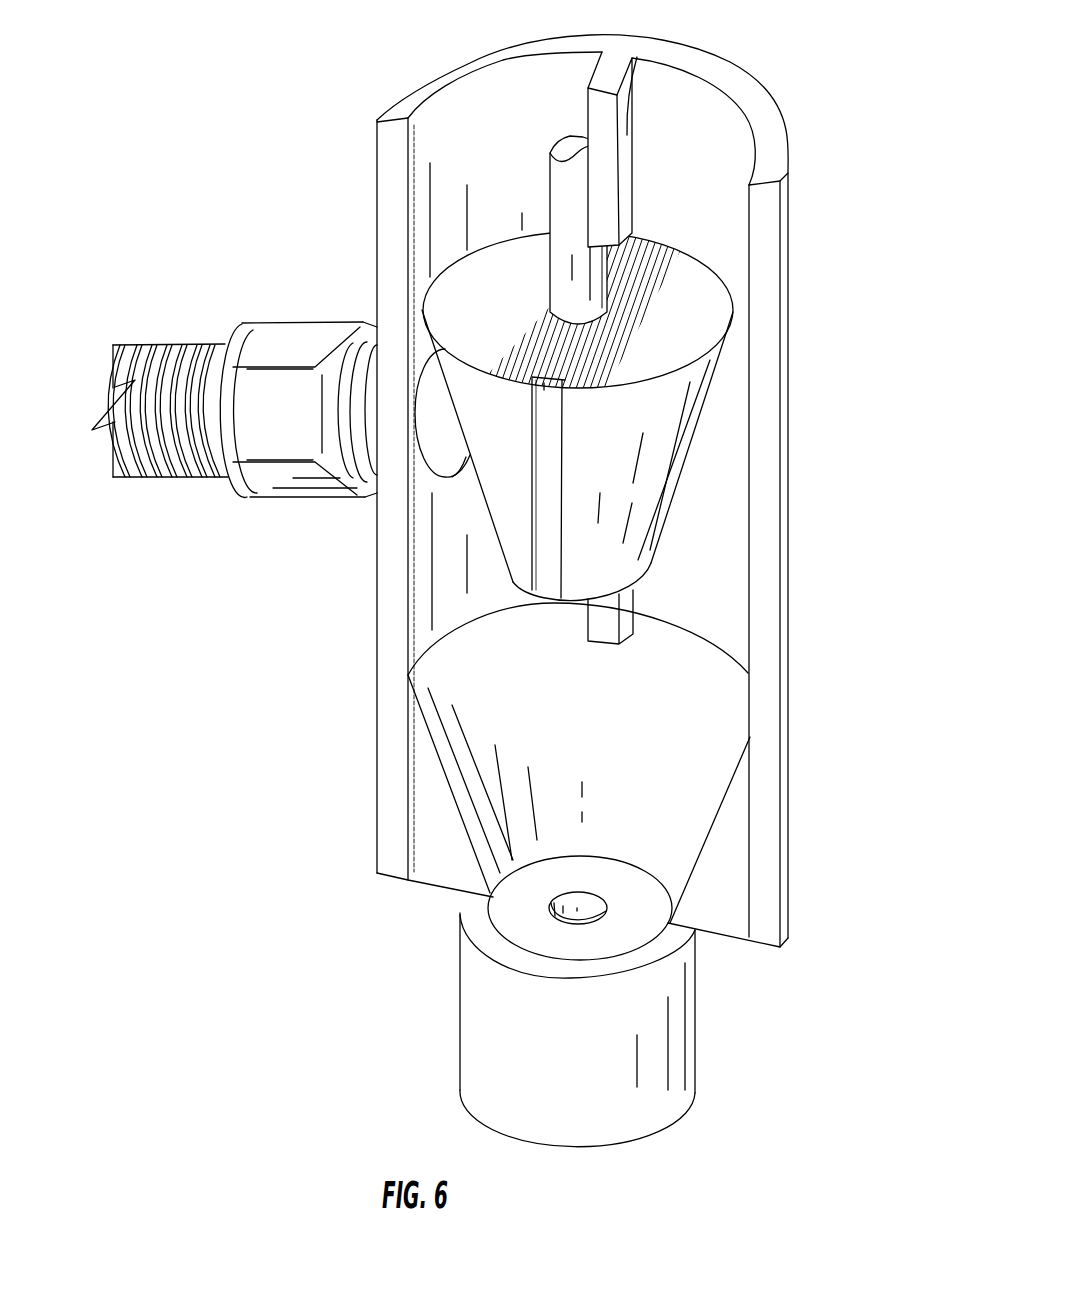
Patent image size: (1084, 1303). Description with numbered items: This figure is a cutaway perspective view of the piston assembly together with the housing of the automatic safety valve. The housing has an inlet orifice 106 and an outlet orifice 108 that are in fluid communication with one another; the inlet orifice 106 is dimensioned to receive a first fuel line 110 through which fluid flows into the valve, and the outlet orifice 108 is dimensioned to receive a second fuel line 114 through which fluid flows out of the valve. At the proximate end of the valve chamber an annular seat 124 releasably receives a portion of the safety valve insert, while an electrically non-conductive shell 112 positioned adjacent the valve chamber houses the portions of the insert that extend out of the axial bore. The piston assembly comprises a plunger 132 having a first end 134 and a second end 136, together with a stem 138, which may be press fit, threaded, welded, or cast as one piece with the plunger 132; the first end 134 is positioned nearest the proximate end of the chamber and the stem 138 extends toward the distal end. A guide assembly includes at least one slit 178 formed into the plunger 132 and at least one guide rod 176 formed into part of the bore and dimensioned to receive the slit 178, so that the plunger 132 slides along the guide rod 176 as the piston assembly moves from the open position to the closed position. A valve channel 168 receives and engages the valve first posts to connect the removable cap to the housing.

The inlet orifice 106 is at (442, 455).
The outlet orifice 108 is at (583, 903).
The first fuel line 110 is at (162, 472).
The electrically non-conductive shell 112 is at (770, 270).
The second fuel line 114 is at (475, 1030).
The annular seat 124 is at (517, 927).
The plunger 132 is at (642, 502).
The first end 134 is at (527, 590).
The second end 136 is at (657, 323).
The stem 138 is at (567, 213).
The valve channel 168 is at (770, 123).
The guide rod 176 is at (633, 57).
The slit 178 is at (540, 378).